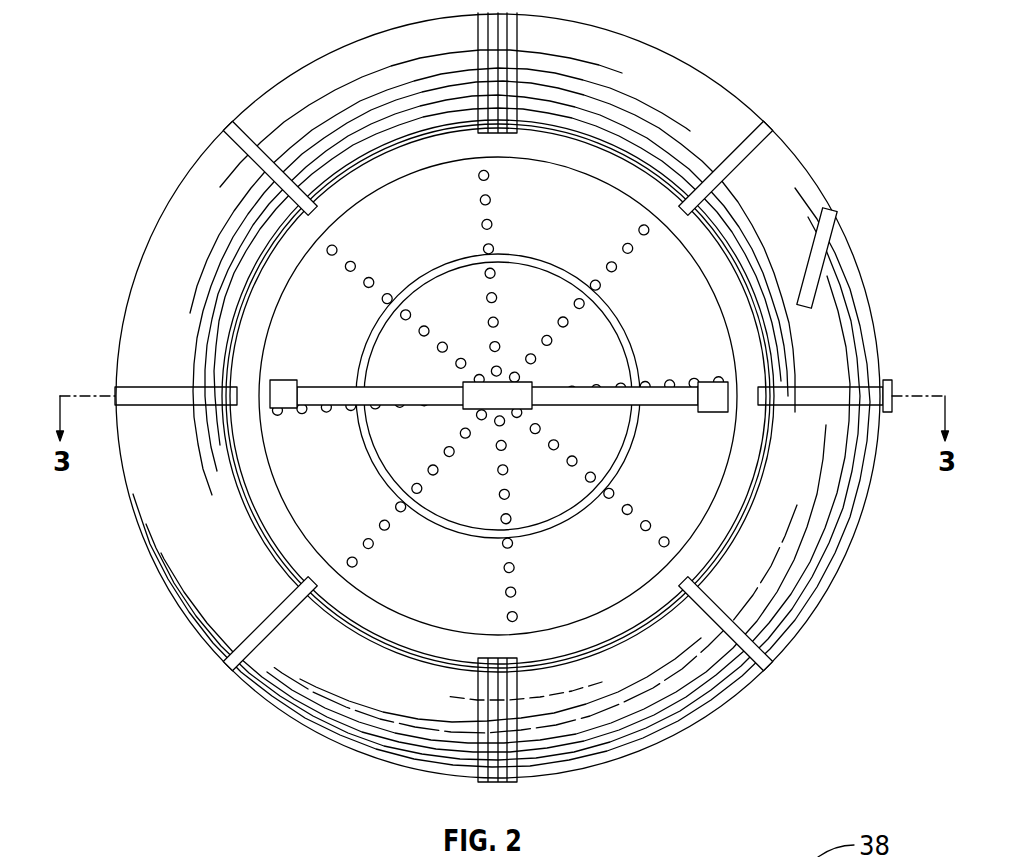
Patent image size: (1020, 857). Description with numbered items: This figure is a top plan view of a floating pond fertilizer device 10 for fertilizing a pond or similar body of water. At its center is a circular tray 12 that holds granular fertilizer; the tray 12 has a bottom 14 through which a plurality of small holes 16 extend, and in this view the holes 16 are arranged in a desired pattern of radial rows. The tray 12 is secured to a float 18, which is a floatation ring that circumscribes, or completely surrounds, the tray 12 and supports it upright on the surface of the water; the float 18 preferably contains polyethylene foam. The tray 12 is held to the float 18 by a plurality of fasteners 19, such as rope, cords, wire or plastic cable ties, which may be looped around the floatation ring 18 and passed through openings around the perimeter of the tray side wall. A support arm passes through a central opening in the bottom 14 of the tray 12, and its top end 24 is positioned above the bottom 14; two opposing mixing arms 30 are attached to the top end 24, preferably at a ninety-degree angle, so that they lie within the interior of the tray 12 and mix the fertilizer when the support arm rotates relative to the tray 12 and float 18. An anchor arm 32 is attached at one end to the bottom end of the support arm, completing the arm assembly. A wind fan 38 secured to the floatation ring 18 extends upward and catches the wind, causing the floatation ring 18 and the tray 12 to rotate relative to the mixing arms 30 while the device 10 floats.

The floating pond fertilizer device 10 is at (136, 154).
The tray 12 is at (405, 197).
The bottom 14 is at (530, 180).
The holes 16 is at (376, 516).
The float 18 is at (143, 510).
The fasteners 19 is at (274, 634).
The top end 24 is at (500, 385).
The mixing arms 30 is at (318, 397).
The anchor arm 32 is at (887, 383).
The wind fan 38 is at (812, 270).